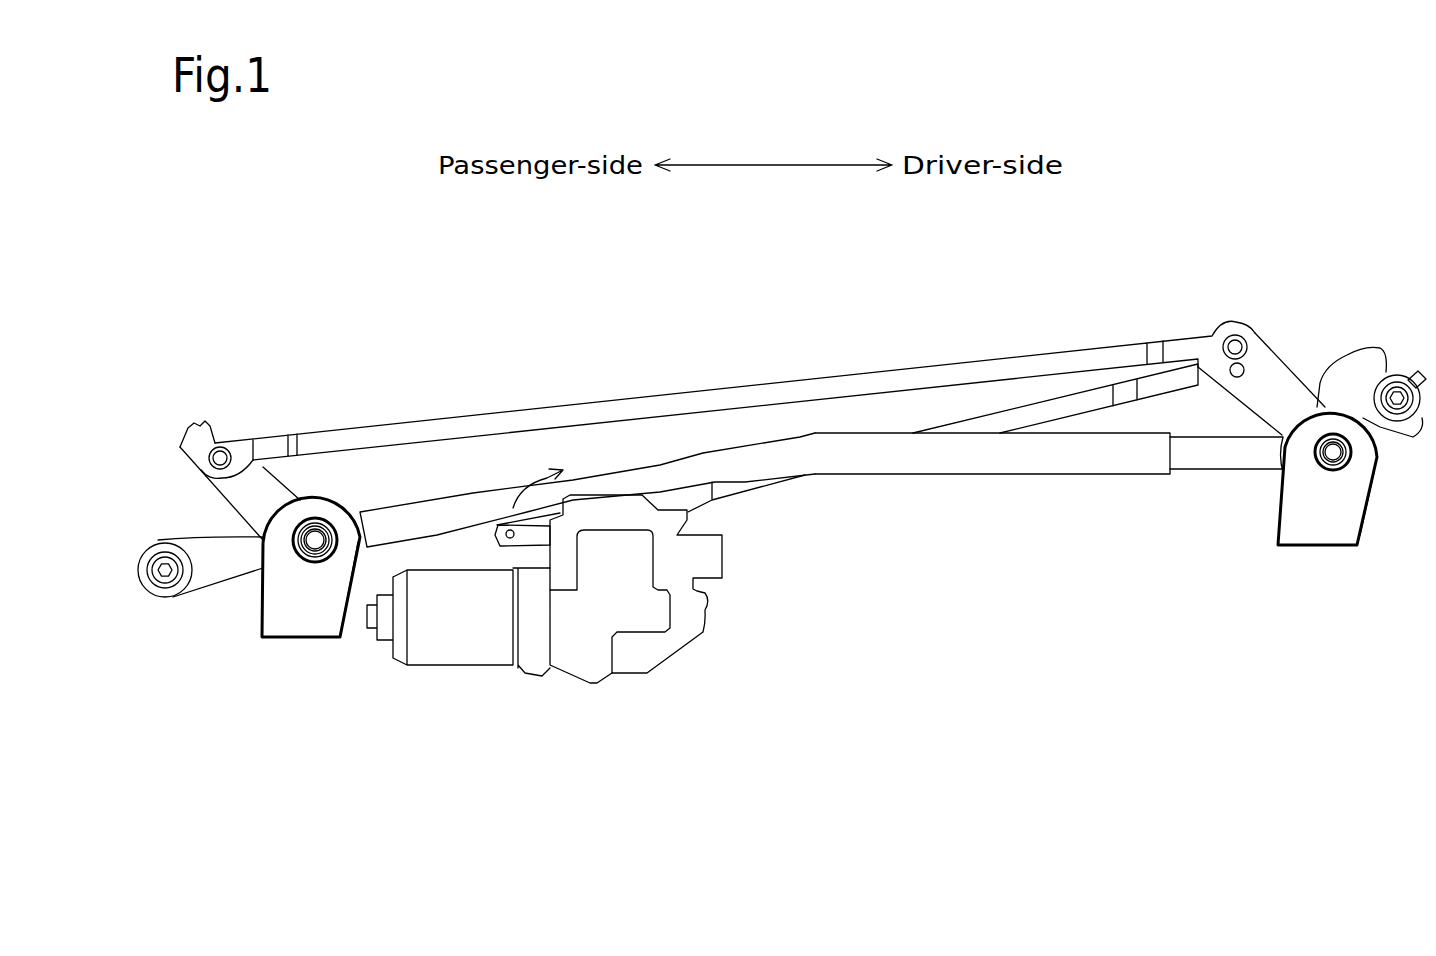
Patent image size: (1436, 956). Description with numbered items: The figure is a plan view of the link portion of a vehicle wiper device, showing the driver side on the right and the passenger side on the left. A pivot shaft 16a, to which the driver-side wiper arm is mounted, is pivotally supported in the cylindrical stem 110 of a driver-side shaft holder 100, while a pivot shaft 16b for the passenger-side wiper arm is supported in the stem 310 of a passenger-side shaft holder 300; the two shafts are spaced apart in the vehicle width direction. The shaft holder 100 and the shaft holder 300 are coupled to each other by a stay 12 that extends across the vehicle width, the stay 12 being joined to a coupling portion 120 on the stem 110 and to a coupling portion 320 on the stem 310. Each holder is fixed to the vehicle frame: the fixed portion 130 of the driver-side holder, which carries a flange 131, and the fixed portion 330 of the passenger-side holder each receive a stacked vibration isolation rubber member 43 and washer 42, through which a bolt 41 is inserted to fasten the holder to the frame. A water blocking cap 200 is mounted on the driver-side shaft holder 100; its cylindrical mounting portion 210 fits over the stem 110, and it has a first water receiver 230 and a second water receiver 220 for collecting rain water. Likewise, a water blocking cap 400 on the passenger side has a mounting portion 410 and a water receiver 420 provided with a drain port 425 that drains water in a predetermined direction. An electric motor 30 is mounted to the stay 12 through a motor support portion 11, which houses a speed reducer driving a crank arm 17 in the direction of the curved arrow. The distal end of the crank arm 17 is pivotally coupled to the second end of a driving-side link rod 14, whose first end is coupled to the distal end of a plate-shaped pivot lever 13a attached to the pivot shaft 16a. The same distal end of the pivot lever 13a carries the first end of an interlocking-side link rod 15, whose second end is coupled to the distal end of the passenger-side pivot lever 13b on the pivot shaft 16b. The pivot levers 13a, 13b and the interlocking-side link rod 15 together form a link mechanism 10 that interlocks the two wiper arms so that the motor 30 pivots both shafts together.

The link mechanism 10 is at (913, 340).
The motor support portion 11 is at (672, 661).
The stay 12 is at (967, 474).
The driver-side pivot lever 13a is at (1247, 320).
The passenger-side pivot lever 13b is at (187, 426).
The driving-side link rod 14 is at (1066, 397).
The interlocking-side link rod 15 is at (988, 363).
The pivot shaft 16a is at (1357, 535).
The pivot shaft 16b is at (303, 548).
The crank arm 17 is at (510, 546).
The electric motor 30 is at (457, 667).
The bolt 41 is at (173, 552).
The washer 42 is at (147, 556).
The vibration isolation rubber member 43 is at (150, 595).
The shaft holder 100 is at (1268, 502).
The stem 110 is at (1283, 473).
The coupling portion 120 is at (1190, 473).
The fixed portion 130 is at (1415, 442).
The flange 131 is at (1378, 467).
The water blocking cap 200 is at (1356, 389).
The mounting portion 210 is at (1317, 457).
The second water receiver 220 is at (1357, 547).
The first water receiver 230 is at (1330, 367).
The shaft holder 300 is at (203, 612).
The stem 310 is at (330, 517).
The coupling portion 320 is at (360, 505).
The fixed portion 330 is at (197, 523).
The water blocking cap 400 is at (357, 650).
The mounting portion 410 is at (320, 557).
The water receiver 420 is at (280, 638).
The drain port 425 is at (312, 658).